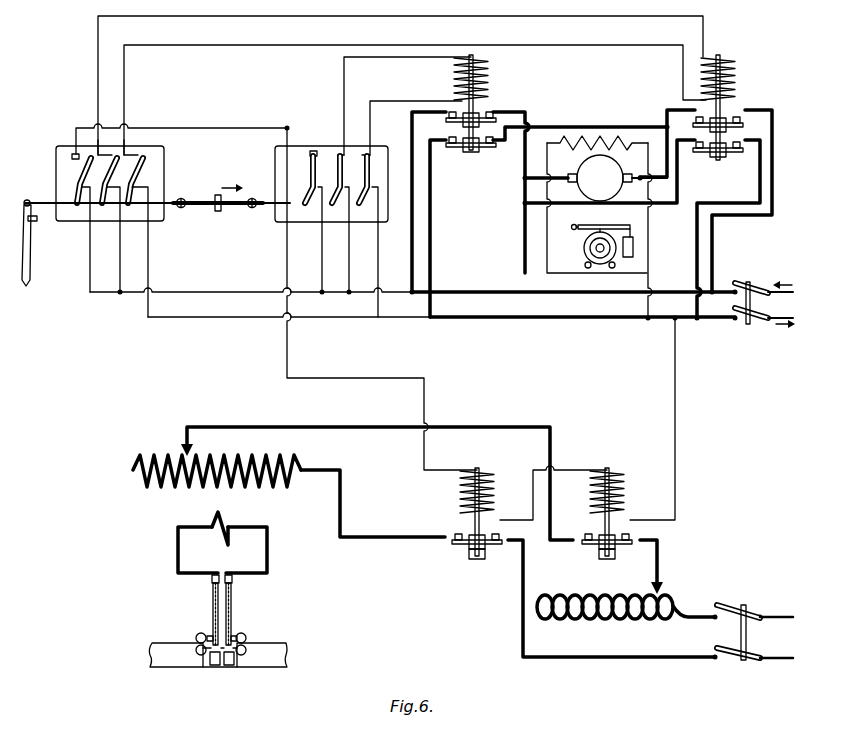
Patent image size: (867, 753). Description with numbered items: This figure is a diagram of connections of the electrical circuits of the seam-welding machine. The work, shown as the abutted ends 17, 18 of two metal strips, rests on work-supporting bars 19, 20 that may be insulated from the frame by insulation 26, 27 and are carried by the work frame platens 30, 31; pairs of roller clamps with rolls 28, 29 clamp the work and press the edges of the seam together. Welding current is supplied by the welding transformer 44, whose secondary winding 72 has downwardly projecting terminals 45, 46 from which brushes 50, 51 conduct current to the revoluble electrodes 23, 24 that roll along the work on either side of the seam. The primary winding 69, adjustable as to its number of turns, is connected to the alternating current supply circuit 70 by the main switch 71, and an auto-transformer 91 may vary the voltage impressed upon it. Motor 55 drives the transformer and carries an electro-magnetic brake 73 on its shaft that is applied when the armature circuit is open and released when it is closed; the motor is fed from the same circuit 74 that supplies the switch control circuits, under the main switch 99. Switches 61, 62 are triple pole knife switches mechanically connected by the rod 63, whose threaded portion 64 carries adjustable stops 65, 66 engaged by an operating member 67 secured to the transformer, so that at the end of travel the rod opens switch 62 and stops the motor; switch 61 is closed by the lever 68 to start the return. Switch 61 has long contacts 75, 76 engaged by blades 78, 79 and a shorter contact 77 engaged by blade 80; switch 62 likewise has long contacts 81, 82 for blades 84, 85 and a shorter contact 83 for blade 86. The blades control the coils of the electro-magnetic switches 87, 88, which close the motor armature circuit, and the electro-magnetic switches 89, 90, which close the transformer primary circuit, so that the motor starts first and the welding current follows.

The end of strip of metal 17 is at (156, 644).
The end of strip of metal 18 is at (284, 643).
The work-supporting bar 19 is at (209, 636).
The work-supporting bar 20 is at (235, 636).
The electrode 23 is at (213, 598).
The electrode 24 is at (231, 598).
The insulation 26 is at (215, 665).
The insulation 27 is at (229, 665).
The roll 28 is at (201, 656).
The roll 29 is at (196, 637).
The work frame platen 30 is at (162, 660).
The work frame platen 31 is at (283, 660).
The welding transformer 44 is at (210, 486).
The secondary terminal 45 is at (178, 553).
The secondary terminal 46 is at (267, 553).
The brushes 50 is at (232, 577).
The brushes 51 is at (212, 577).
The motor 55 is at (599, 227).
The switch 61 is at (60, 153).
The switch 62 is at (275, 153).
The rod 63 is at (139, 207).
The threaded portion 64 is at (200, 201).
The adjustable stop 65 is at (181, 208).
The adjustable stop 66 is at (252, 208).
The operating member 67 is at (218, 211).
The lever 68 is at (31, 250).
The primary winding 69 is at (270, 428).
The alternating current supply circuit 70 is at (755, 631).
The main switch 71 is at (740, 660).
The secondary winding 72 is at (229, 523).
The electro-magnetic brake 73 is at (603, 237).
The circuit 74 is at (765, 304).
The contact 75 is at (104, 150).
The contact 76 is at (138, 152).
The contact 77 is at (72, 152).
The switch blade 78 is at (110, 172).
The switch blade 79 is at (138, 172).
The switch blade 80 is at (82, 172).
The contact 81 is at (338, 152).
The contact 82 is at (362, 152).
The contact 83 is at (311, 151).
The switch blade 84 is at (339, 172).
The switch blade 85 is at (366, 172).
The switch blade 86 is at (311, 172).
The electro-magnetic switch 87 is at (471, 114).
The electro-magnetic switch 88 is at (718, 118).
The electro-magnetic switch 89 is at (477, 525).
The electro-magnetic switch 90 is at (607, 525).
The auto-transformer 91 is at (626, 621).
The main switch 99 is at (748, 324).